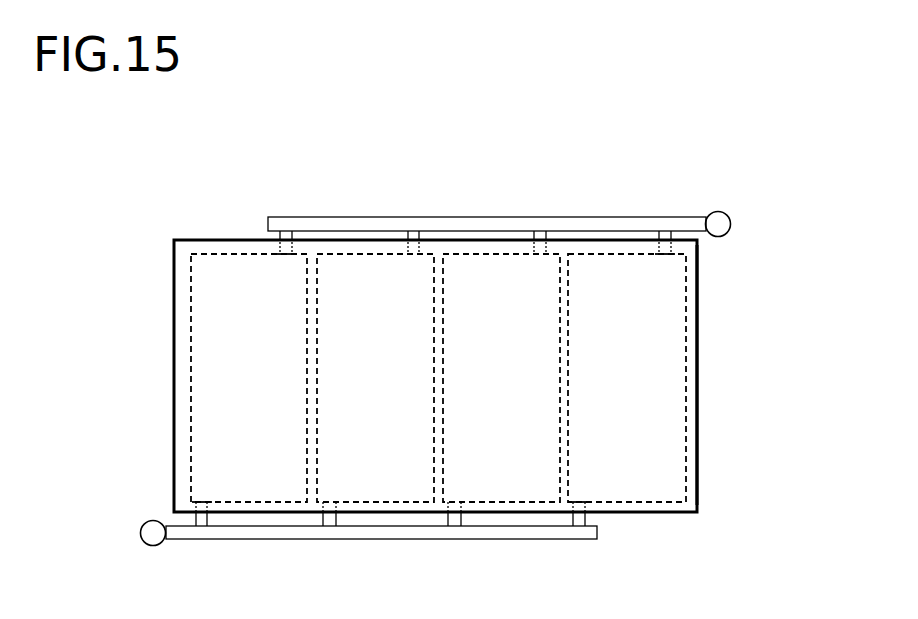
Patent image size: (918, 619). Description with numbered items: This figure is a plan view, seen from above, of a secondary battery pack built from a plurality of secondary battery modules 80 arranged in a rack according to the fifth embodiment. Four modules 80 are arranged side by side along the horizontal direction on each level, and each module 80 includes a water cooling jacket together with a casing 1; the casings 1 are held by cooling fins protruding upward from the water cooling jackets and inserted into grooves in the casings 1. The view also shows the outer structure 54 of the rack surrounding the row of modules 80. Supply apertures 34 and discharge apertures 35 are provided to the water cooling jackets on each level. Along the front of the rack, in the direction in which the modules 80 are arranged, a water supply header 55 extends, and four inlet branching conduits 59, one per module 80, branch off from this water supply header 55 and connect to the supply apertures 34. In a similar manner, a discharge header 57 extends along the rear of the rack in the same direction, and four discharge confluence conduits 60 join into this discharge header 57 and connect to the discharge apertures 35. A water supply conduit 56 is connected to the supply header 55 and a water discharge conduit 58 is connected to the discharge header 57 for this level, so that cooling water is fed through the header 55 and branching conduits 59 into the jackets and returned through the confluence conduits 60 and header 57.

The casing 1 is at (660, 406).
The supply aperture 34 is at (285, 256).
The discharge aperture 35 is at (206, 502).
The frame 54 is at (174, 380).
The water supply header 55 is at (409, 227).
The water supply conduit 56 is at (731, 222).
The discharge header 57 is at (298, 534).
The water discharge conduit 58 is at (140, 533).
The inlet branching conduit 59 is at (288, 235).
The discharge confluence conduit 60 is at (200, 540).
The module 80 is at (697, 350).